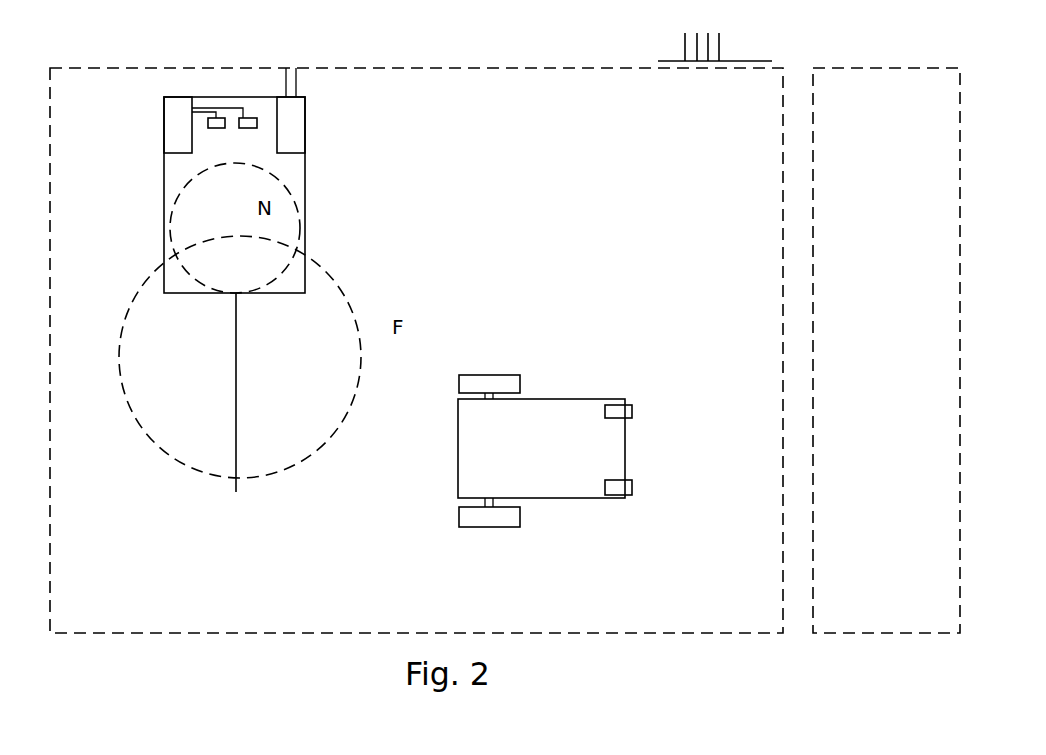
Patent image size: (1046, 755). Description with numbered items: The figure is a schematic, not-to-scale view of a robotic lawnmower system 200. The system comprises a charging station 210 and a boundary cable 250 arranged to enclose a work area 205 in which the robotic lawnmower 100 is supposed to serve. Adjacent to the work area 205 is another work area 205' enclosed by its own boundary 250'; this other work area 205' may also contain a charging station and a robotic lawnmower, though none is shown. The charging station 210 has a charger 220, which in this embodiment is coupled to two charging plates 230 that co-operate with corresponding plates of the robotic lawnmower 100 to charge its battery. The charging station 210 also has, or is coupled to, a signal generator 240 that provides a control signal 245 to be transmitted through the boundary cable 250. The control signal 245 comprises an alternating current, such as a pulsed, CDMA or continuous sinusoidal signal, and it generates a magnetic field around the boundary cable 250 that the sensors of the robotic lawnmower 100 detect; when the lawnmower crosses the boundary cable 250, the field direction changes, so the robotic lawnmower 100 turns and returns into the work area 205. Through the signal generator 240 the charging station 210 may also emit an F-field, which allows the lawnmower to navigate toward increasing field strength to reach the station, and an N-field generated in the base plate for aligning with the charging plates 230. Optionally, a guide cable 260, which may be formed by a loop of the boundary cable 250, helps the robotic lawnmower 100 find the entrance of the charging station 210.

The robotic lawnmower 100 is at (525, 498).
The robotic lawnmower system 200 is at (228, 153).
The work area 205 is at (553, 271).
The other work area 205' is at (891, 211).
The charging station 210 is at (163, 157).
The charger 220 is at (178, 105).
The charging plates 230 is at (240, 76).
The signal generator 240 is at (306, 135).
The control signal 245 is at (715, 47).
The boundary cable 250 is at (416, 350).
The boundary 250' is at (886, 350).
The guide cable 260 is at (236, 330).